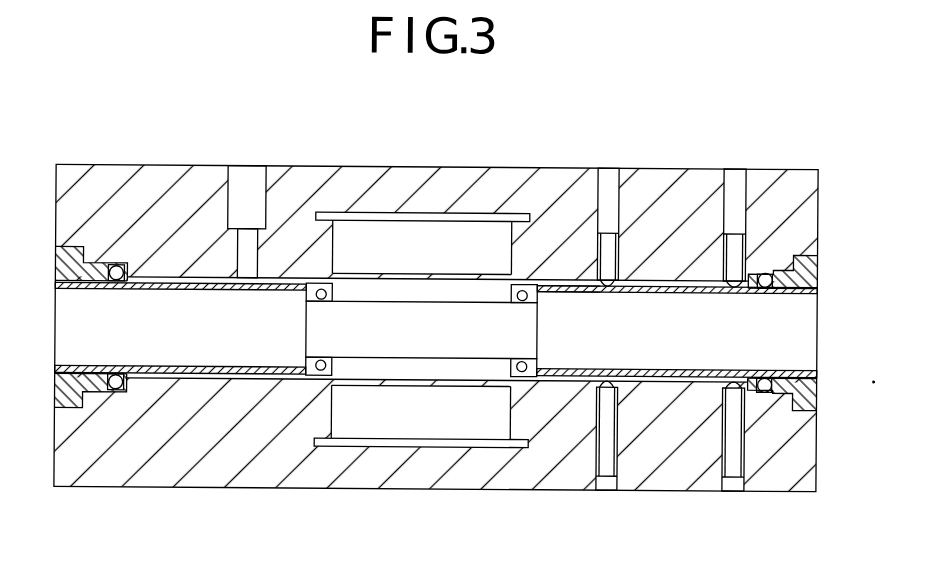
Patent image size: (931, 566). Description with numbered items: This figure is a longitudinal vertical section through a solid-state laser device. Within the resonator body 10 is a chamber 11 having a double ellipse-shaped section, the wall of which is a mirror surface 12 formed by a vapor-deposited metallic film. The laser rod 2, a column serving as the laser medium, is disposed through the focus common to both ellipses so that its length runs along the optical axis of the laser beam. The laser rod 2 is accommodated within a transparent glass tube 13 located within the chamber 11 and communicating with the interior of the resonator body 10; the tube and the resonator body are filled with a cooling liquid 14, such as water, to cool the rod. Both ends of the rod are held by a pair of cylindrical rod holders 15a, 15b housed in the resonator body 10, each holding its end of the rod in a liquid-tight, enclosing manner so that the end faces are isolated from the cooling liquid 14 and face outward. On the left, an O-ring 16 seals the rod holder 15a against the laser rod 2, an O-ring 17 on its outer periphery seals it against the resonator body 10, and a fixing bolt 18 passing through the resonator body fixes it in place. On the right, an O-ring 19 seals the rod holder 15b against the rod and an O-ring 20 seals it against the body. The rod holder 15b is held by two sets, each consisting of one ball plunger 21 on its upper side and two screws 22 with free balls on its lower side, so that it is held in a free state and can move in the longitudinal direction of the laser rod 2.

The laser rod 2 is at (383, 345).
The resonator body 10 is at (323, 175).
The chamber 11 is at (478, 238).
The mirror surface 12 is at (445, 223).
The transparent glass tube 13 is at (373, 272).
The cooling liquid 14 is at (477, 297).
The rod holder 15a is at (165, 280).
The rod holder 15b is at (670, 279).
The O-ring 16 is at (303, 285).
The O-ring 17 is at (112, 266).
The fixing bolt 18 is at (242, 220).
The O-ring 19 is at (552, 293).
The O-ring 20 is at (777, 282).
The ball plunger 21 is at (610, 248).
The screw with free ball 22 is at (605, 447).